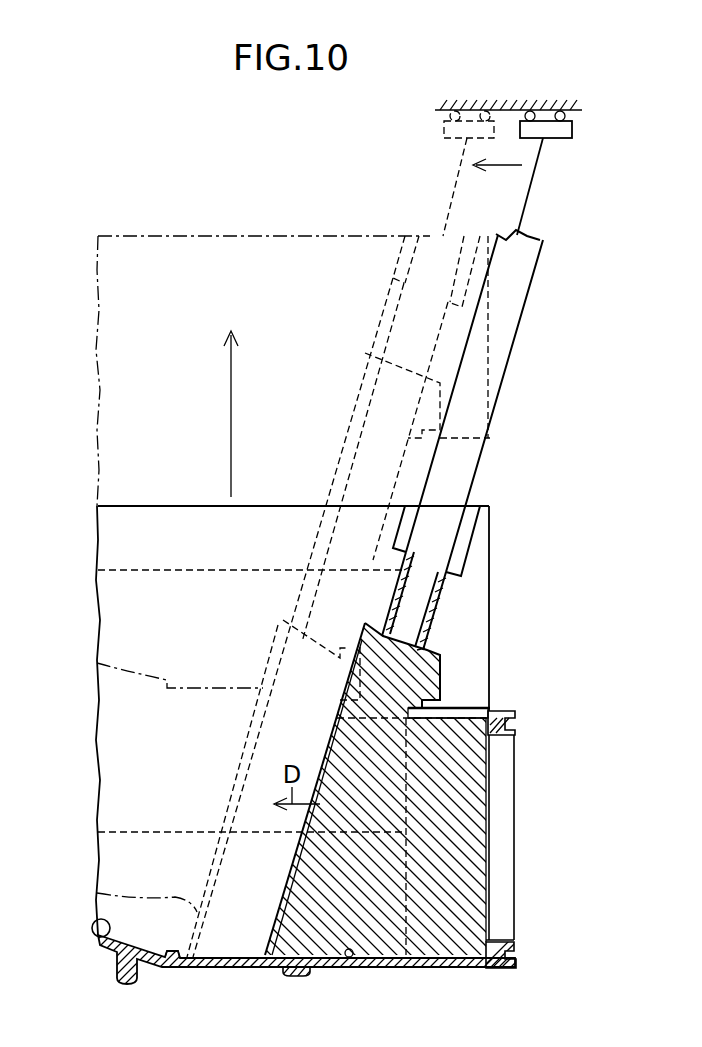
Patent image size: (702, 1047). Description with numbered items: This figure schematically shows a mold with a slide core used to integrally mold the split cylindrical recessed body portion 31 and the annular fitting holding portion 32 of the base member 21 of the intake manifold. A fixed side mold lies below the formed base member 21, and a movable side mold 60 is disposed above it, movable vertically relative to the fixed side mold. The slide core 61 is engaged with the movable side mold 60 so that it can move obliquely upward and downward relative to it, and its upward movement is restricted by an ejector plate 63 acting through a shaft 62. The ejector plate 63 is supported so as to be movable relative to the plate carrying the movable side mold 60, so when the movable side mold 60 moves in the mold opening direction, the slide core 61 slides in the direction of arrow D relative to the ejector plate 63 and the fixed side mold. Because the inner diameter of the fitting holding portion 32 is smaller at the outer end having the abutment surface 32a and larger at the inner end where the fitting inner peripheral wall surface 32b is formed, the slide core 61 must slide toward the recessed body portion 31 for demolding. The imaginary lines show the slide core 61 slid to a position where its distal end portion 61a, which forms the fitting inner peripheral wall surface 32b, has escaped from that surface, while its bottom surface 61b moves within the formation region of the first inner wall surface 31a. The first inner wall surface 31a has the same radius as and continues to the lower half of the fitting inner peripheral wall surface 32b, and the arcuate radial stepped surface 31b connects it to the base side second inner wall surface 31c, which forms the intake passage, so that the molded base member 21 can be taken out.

The ejector plate 63 is at (515, 100).
The movable side mold 60 is at (213, 247).
The shaft 62 is at (383, 457).
The slide core 61 is at (300, 887).
The distal end portion 61a is at (478, 873).
The bottom surface 61b is at (280, 968).
The fitting holding portion 32 is at (473, 708).
The abutment surface 32a is at (483, 738).
The fitting inner peripheral wall surface 32b is at (450, 720).
The recessed body portion 31 is at (127, 832).
The first inner wall surface 31a is at (340, 967).
The radial stepped surface 31b is at (181, 966).
The base side second inner wall surface 31c is at (92, 932).
The base member 21 is at (450, 968).